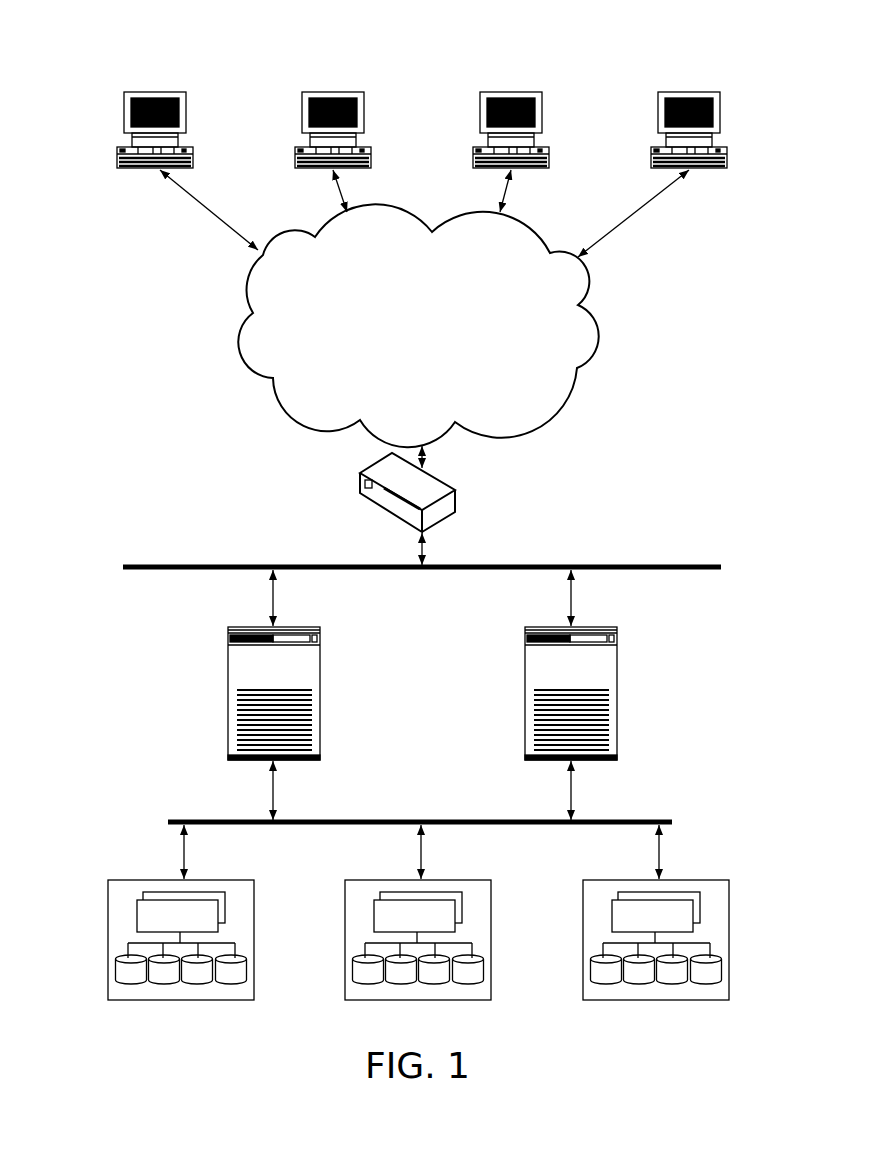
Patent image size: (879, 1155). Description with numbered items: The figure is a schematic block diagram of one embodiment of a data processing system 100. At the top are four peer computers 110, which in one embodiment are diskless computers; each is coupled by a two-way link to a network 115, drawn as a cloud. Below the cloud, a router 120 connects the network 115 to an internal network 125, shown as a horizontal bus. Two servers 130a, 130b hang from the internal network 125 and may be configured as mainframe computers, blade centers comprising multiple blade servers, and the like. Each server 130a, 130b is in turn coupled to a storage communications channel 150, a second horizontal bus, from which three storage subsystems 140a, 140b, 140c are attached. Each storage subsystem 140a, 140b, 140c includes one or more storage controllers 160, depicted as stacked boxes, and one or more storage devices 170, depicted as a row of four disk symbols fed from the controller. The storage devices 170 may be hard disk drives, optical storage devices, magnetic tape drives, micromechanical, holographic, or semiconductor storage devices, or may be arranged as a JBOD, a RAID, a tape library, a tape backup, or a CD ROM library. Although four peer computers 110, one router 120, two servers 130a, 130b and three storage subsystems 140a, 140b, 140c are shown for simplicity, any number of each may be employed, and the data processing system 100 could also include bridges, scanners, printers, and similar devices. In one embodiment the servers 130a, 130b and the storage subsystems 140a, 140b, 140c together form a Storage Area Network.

The data processing system 100 is at (122, 60).
The peer computer 110 is at (186, 92).
The network 115 is at (399, 345).
The router 120 is at (455, 490).
The internal network 125 is at (142, 564).
The server 130a is at (320, 628).
The server 130b is at (617, 628).
The storage communications channel 150 is at (361, 819).
The storage subsystem 140a is at (254, 880).
The storage subsystem 140b is at (491, 880).
The storage subsystem 140c is at (729, 880).
The storage controller 160 is at (137, 914).
The storage device 170 is at (116, 973).